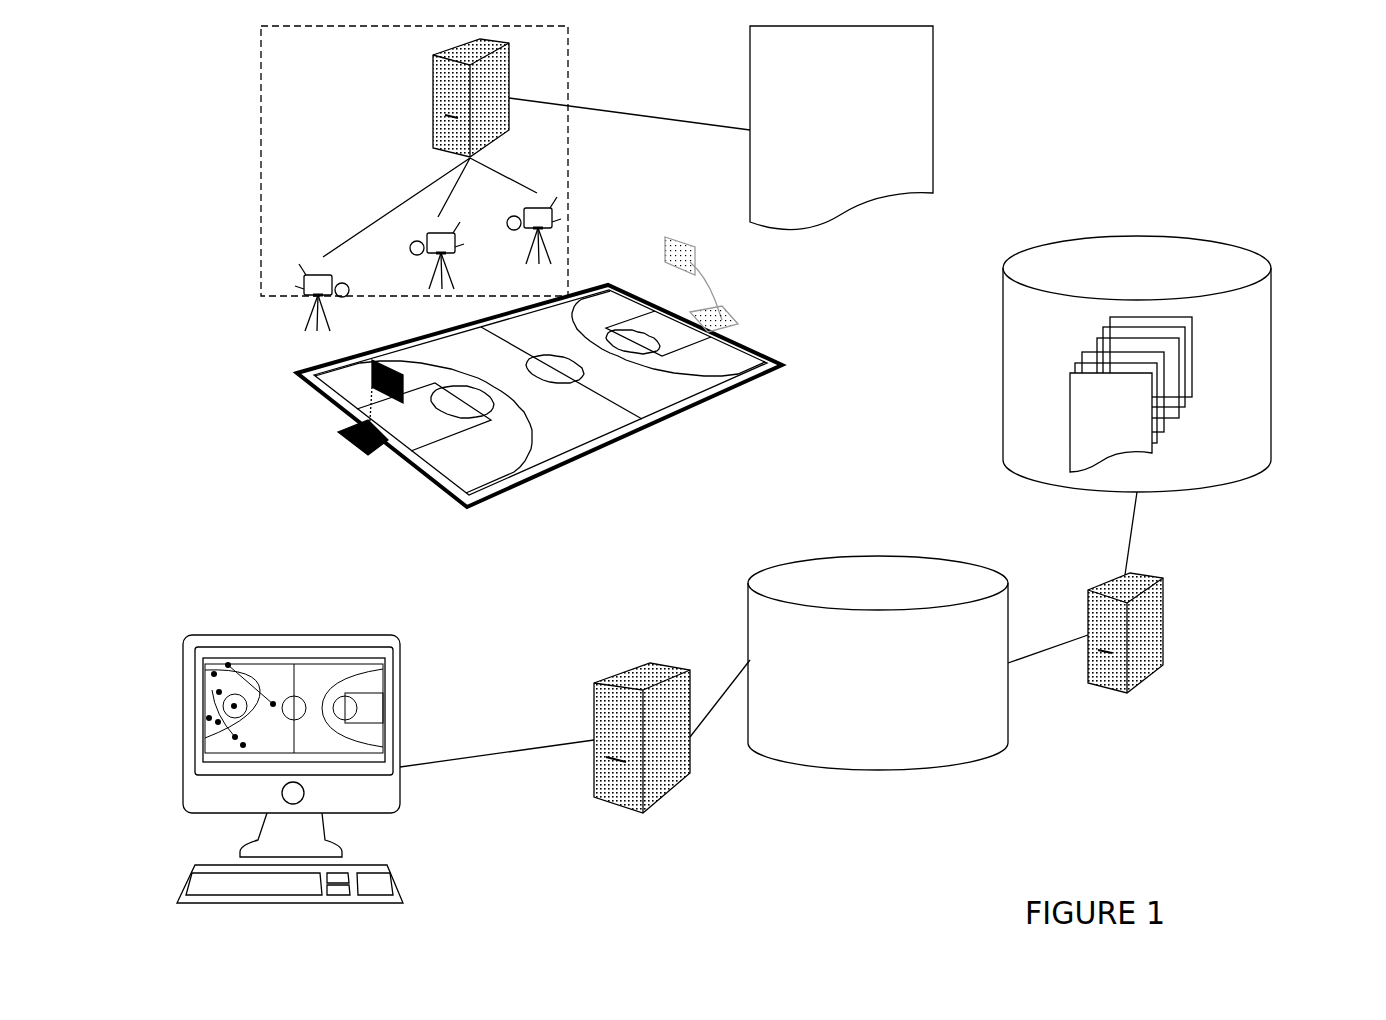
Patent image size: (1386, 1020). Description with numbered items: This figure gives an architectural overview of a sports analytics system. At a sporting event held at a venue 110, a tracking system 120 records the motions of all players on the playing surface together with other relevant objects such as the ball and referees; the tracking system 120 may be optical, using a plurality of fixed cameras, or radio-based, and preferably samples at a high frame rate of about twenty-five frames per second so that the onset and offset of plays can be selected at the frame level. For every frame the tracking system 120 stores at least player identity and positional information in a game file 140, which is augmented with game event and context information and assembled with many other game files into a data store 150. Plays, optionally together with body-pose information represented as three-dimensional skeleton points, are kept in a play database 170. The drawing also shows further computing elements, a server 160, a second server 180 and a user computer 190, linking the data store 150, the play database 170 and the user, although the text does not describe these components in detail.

The venue 110 is at (524, 372).
The tracking system 120 is at (505, 178).
The game file 140 is at (819, 128).
The data store 150 is at (1168, 405).
The server 160 is at (1113, 633).
The play database 170 is at (849, 673).
The server 180 is at (545, 748).
The user computer 190 is at (272, 769).